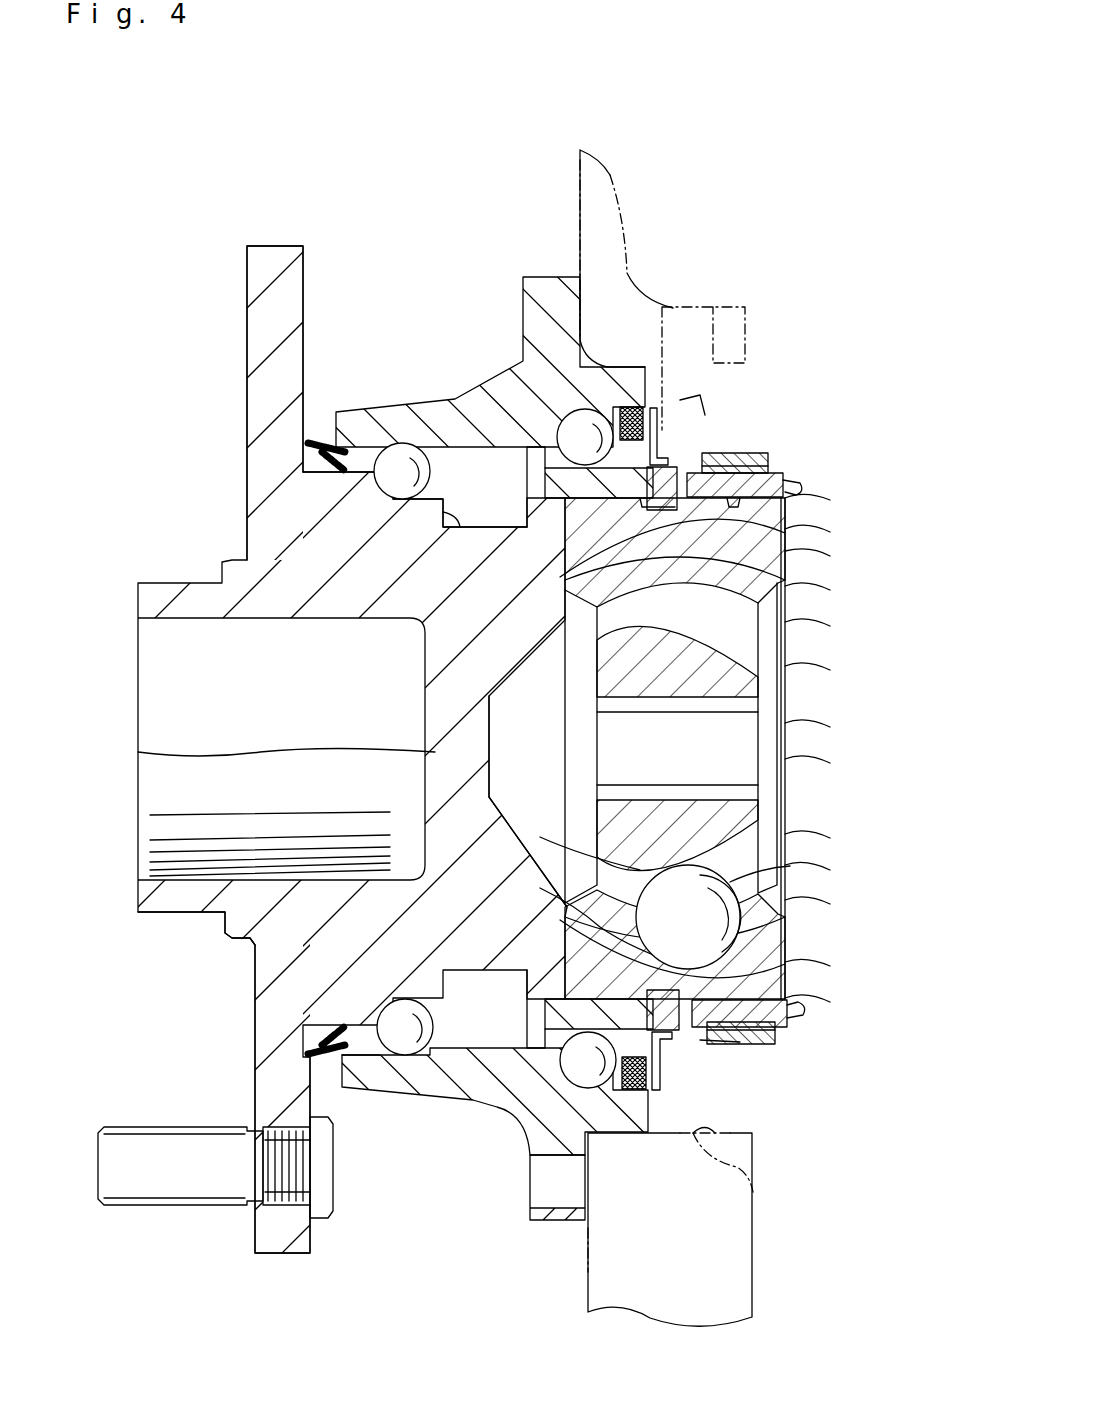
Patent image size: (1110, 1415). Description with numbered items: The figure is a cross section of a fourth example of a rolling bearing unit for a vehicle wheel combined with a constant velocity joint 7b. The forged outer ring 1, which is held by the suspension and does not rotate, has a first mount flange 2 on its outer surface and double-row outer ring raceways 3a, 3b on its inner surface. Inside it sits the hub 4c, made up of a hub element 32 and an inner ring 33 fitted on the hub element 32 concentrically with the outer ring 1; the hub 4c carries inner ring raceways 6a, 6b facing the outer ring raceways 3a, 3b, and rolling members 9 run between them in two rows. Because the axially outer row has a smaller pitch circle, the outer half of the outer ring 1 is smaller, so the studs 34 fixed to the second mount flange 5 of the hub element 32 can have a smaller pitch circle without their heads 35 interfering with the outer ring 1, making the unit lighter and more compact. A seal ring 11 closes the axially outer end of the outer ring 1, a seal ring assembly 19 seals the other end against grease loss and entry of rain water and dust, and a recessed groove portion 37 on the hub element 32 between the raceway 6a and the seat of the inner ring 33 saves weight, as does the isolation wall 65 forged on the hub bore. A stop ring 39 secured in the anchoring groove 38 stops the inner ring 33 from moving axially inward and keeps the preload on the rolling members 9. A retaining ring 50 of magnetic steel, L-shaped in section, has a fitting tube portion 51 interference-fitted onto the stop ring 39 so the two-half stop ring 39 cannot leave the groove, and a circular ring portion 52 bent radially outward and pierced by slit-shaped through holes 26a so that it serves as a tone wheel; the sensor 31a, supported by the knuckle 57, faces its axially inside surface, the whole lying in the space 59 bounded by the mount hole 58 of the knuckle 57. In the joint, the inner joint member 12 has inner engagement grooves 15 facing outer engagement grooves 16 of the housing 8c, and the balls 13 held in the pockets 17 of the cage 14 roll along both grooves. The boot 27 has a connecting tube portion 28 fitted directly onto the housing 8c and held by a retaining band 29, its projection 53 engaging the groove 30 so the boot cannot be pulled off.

The outer ring 1 is at (545, 355).
The first mount flange 2 is at (566, 1215).
The outer ring raceway 3a is at (430, 1060).
The outer ring raceway 3b is at (590, 1120).
The hub 4c is at (295, 905).
The second mount flange 5 is at (258, 345).
The inner ring raceway 6a is at (345, 545).
The inner ring raceway 6b is at (578, 470).
The constant velocity joint 7b is at (748, 644).
The housing 8c is at (788, 592).
The rolling members 9 is at (540, 425).
The seal ring 11 is at (322, 440).
The inner ring or inner joint member 12 is at (760, 815).
The balls 13 is at (722, 893).
The cage 14 is at (765, 925).
The inner engagement grooves 15 is at (768, 655).
The outer engagement grooves 16 is at (768, 532).
The pockets 17 is at (567, 870).
The seal ring assembly 19 is at (636, 373).
The slit-shaped through holes 26a is at (663, 430).
The boot 27 is at (780, 488).
The connecting tube portion 28 is at (795, 1030).
The retaining band 29 is at (758, 448).
The groove 30 is at (800, 1003).
The sensor 31a is at (688, 322).
The hub element 32 is at (228, 562).
The inner ring 33 is at (603, 373).
The studs 34 is at (165, 1175).
The head 35 is at (320, 1180).
The recessed groove portion 37 is at (425, 545).
The anchoring groove 38 is at (703, 520).
The stop ring 39 is at (575, 1043).
The retaining ring 50 is at (710, 400).
The fitting tube portion 51 is at (682, 1040).
The circular ring portion 52 is at (735, 425).
The projection 53 is at (745, 503).
The knuckle 57 is at (755, 1215).
The mount hole 58 is at (752, 1170).
The space 59 is at (730, 1055).
The isolation wall 65 is at (140, 752).